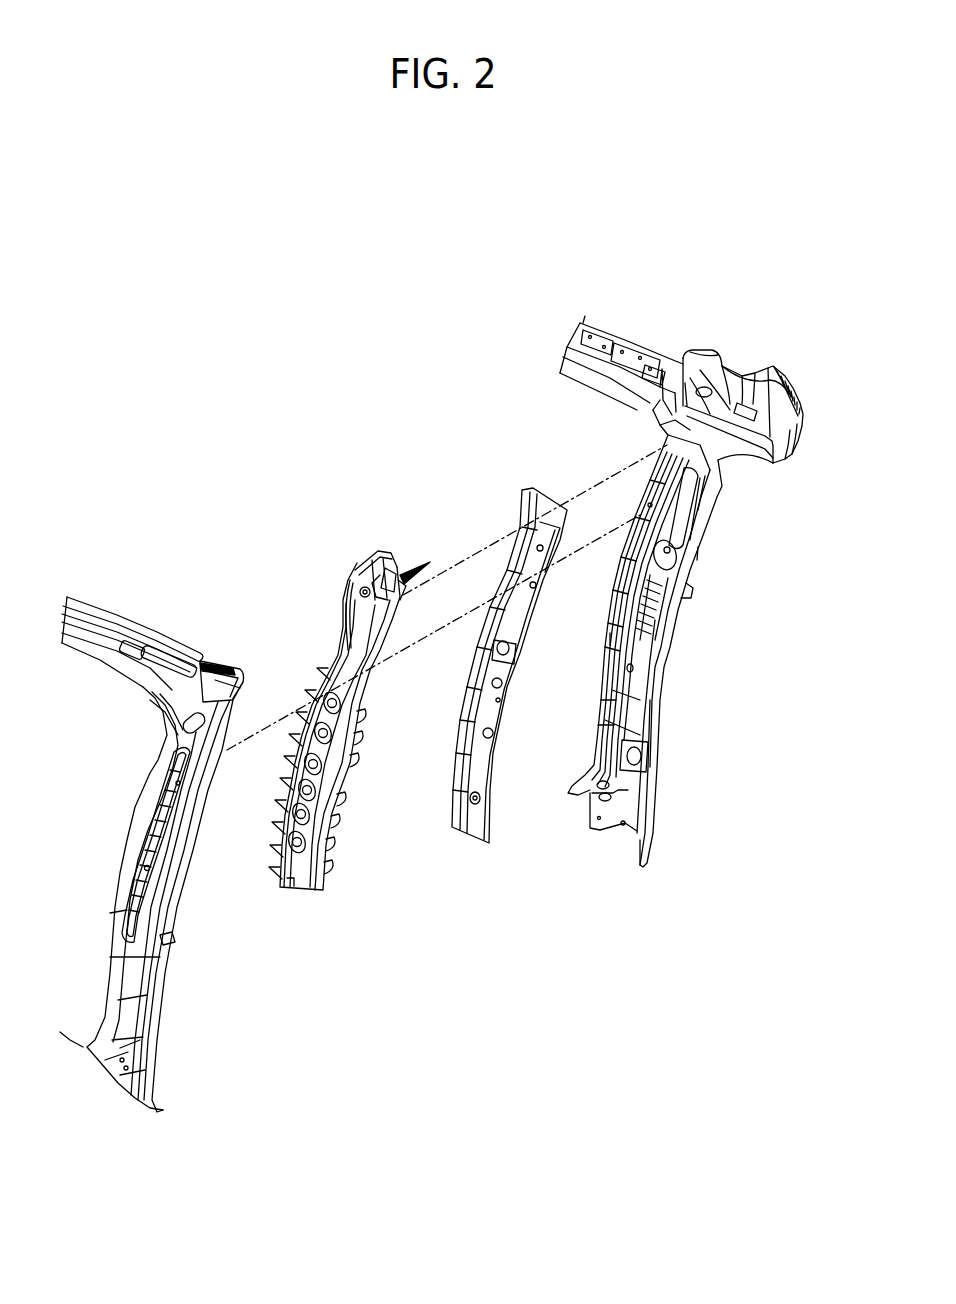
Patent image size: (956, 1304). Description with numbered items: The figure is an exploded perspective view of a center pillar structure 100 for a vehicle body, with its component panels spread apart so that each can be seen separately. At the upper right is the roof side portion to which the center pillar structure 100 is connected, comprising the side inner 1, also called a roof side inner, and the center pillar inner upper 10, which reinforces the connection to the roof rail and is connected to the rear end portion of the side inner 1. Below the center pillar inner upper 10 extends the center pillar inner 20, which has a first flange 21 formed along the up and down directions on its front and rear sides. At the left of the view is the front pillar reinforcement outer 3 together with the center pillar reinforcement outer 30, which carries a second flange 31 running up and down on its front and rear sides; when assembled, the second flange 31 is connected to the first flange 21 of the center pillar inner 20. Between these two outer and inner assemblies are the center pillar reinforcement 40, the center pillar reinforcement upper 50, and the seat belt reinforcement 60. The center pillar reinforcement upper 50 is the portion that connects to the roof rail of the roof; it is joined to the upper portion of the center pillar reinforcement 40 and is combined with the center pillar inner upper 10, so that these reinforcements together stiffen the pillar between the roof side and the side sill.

The center pillar structure 100 is at (334, 282).
The side inner 1 is at (630, 321).
The center pillar inner upper 10 is at (782, 358).
The center pillar inner 20 is at (680, 656).
The first flange 21 is at (690, 547).
The front pillar reinforcement outer 3 is at (86, 690).
The center pillar reinforcement outer 30 is at (112, 830).
The second flange 31 is at (165, 932).
The center pillar reinforcement 40 is at (355, 808).
The center pillar reinforcement upper 50 is at (378, 540).
The seat belt reinforcement 60 is at (530, 474).